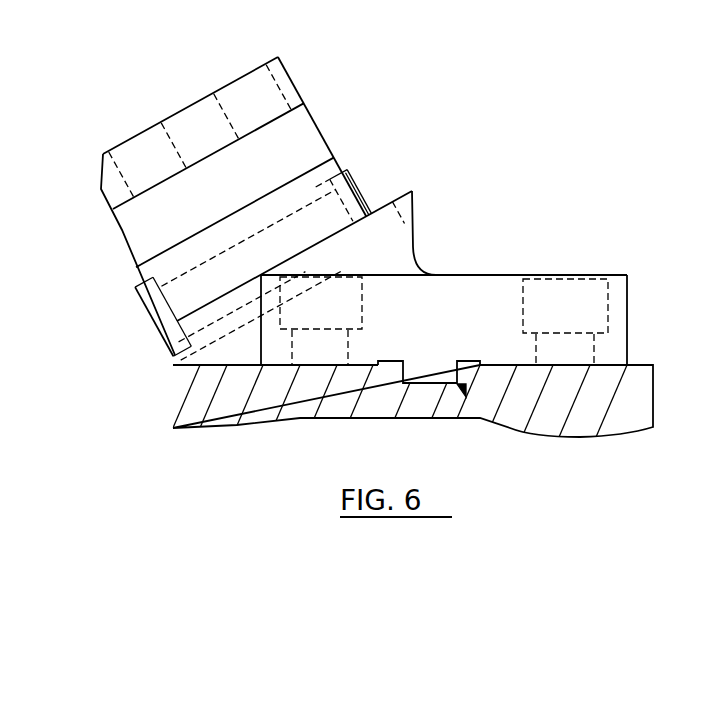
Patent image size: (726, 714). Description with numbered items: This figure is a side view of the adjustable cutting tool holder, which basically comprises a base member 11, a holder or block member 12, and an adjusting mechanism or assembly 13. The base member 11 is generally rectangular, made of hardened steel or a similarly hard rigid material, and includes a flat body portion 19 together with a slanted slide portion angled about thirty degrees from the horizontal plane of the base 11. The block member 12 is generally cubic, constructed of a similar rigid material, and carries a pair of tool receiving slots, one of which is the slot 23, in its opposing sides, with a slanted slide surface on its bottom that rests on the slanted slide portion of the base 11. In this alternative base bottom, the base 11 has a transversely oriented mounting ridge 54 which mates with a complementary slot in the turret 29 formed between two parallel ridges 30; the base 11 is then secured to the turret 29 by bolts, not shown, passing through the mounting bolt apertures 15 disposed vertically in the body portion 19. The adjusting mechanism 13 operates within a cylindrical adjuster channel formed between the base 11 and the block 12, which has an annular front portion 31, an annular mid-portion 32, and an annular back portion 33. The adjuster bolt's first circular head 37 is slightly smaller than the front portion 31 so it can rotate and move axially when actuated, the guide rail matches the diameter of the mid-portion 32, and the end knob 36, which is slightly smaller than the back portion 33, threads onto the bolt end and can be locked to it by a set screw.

The base member 11 is at (605, 239).
The block member 12 is at (116, 107).
The adjusting mechanism 13 is at (136, 328).
The mounting bolt apertures 15 is at (352, 305).
The flat body portion 19 is at (627, 276).
The tool receiving slot 23 is at (184, 222).
The turret 29 is at (175, 428).
The parallel ridges 30 is at (403, 372).
The annular front portion 31 is at (148, 284).
The annular mid-portion 32 is at (229, 241).
The annular back portion 33 is at (328, 183).
The end knob 36 is at (349, 174).
The first circular head 37 is at (140, 297).
The mounting ridge 54 is at (467, 388).